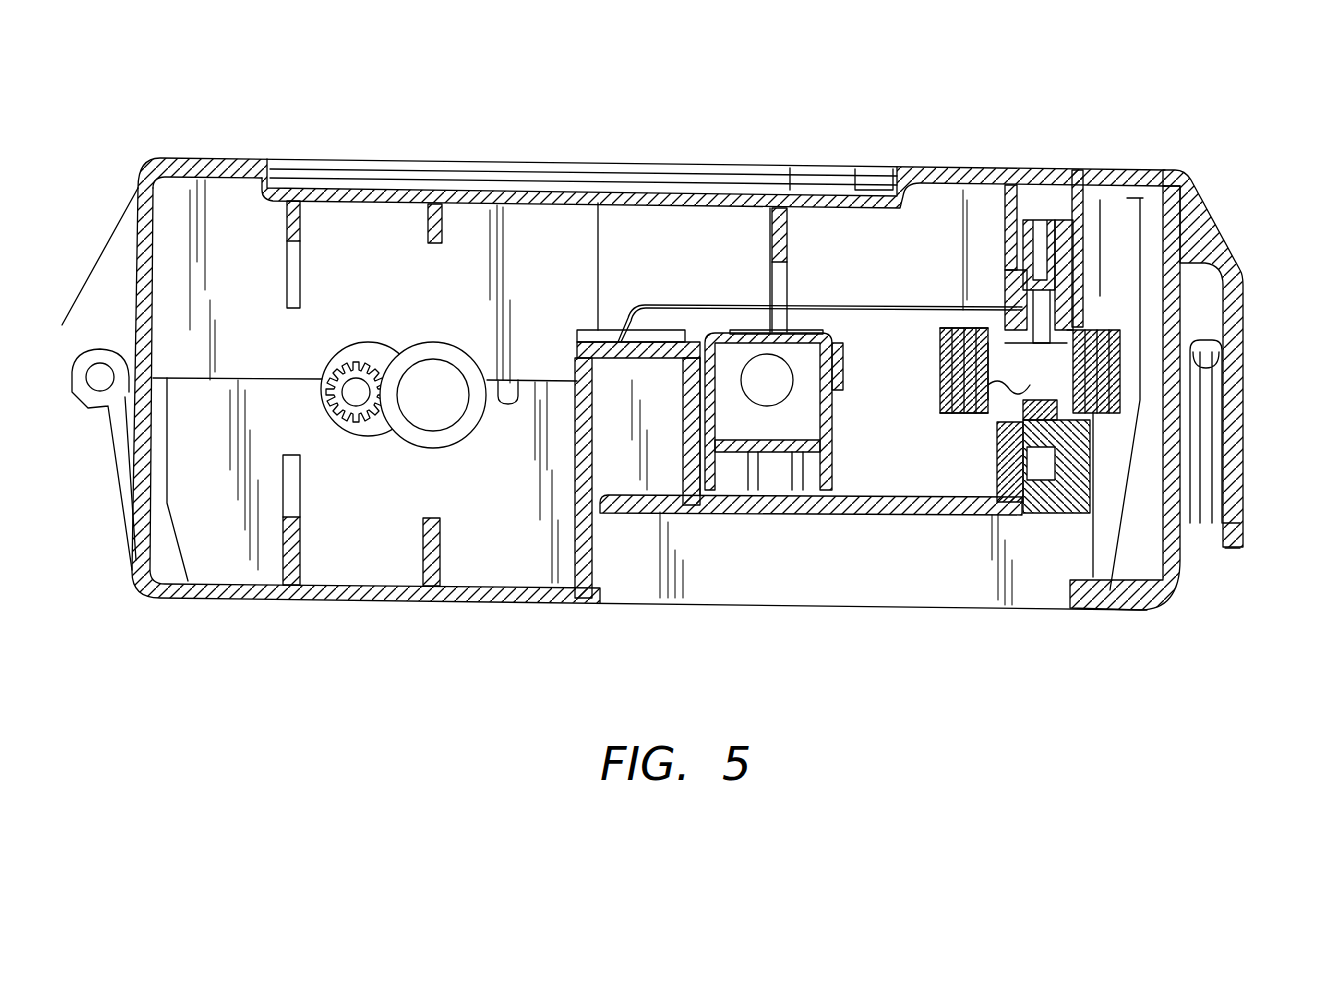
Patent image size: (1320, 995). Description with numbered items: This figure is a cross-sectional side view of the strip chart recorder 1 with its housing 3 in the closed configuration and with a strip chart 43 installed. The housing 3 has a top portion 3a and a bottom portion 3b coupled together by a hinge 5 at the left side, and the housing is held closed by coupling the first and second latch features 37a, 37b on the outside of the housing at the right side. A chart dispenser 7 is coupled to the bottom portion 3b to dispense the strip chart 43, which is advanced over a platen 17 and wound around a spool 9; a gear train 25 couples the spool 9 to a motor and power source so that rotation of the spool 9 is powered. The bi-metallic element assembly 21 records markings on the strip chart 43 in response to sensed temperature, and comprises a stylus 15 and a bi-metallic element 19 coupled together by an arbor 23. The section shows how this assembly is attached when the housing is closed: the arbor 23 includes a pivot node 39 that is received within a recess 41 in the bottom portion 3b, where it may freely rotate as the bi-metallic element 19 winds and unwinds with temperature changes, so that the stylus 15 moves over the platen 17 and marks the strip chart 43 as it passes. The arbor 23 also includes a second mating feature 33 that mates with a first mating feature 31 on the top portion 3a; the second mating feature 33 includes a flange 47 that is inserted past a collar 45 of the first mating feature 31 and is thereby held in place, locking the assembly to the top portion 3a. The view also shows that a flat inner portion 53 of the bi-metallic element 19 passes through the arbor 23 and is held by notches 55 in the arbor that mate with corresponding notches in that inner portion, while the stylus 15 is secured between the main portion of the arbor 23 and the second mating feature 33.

The strip chart recorder 1 is at (868, 95).
The housing 3 is at (133, 164).
The top portion 3a is at (207, 160).
The bottom portion 3b is at (137, 584).
The hinge 5 is at (88, 370).
The chart dispenser 7 is at (806, 332).
The spool 9 is at (422, 358).
The stylus 15 is at (672, 303).
The platen 17 is at (600, 338).
The bi-metallic element 19 is at (940, 413).
The bi-metallic element assembly 21 is at (926, 344).
The arbor 23 is at (1022, 300).
The gear train 25 is at (337, 363).
The first mating feature 31 is at (990, 330).
The second mating feature 33 is at (1084, 300).
The first latch feature 37a is at (1193, 208).
The second latch feature 37b is at (1180, 560).
The pivot node 39 is at (1033, 490).
The recess 41 is at (1010, 513).
The strip chart 43 is at (520, 370).
The collar 45 is at (1022, 248).
The flange 47 is at (1058, 218).
The flat inner portion 53 is at (1000, 393).
The notches 55 is at (1020, 420).